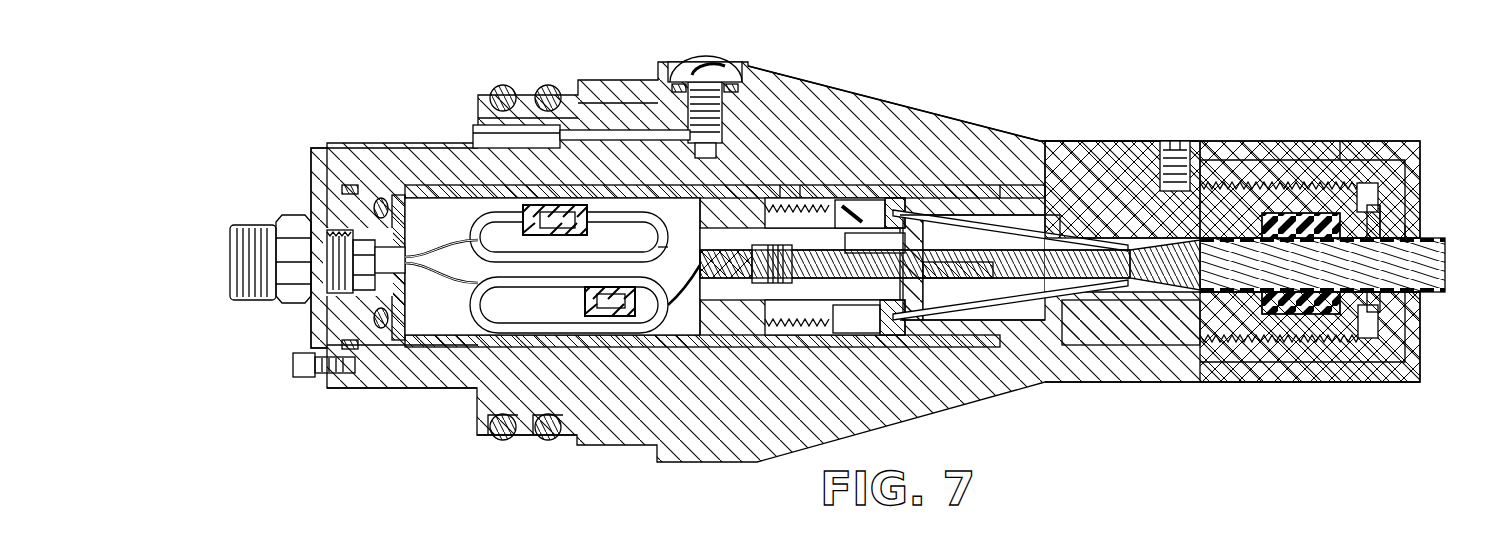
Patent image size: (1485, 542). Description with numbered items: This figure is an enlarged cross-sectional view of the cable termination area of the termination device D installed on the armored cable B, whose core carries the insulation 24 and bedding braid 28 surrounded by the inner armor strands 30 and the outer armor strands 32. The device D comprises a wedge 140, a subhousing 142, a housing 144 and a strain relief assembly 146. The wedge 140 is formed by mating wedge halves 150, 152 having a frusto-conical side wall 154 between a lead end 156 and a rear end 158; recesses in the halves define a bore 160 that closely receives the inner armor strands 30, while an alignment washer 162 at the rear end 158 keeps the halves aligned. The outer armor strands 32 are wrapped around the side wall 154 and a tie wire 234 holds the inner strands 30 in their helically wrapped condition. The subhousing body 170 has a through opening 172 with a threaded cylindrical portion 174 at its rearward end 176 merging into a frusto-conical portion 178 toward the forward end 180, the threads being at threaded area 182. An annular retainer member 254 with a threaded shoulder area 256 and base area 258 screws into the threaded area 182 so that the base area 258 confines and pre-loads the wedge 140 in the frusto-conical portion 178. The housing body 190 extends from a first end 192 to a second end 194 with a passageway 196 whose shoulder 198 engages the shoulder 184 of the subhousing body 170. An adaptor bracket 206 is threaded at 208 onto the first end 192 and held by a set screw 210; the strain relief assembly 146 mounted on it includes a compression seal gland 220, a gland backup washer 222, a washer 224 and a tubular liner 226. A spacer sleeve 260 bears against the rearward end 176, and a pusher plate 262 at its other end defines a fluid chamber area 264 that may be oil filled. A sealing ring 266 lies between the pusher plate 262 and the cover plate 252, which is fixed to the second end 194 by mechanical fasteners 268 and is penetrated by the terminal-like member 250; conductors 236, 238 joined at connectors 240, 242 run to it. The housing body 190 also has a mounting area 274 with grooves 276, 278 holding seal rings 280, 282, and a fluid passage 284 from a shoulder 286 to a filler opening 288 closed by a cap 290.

The insulation 24 is at (704, 202).
The bedding braid 28 is at (738, 280).
The inner armor strands 30 is at (837, 287).
The outer armor strands 32 is at (1130, 258).
The wedge 140 is at (1058, 300).
The subhousing 142 is at (840, 180).
The housing 144 is at (1019, 122).
The strain relief assembly 146 is at (1260, 386).
The wedge half 150 is at (978, 237).
The wedge half 152 is at (1005, 300).
The frusto-conical side wall 154 is at (1008, 238).
The lead end 156 is at (1118, 290).
The rear end 158 is at (903, 312).
The bore 160 is at (993, 275).
The alignment washer 162 is at (905, 243).
The subhousing body 170 is at (890, 192).
The through opening 172 is at (820, 196).
The cylindrical portion 174 is at (862, 205).
The rearward end 176 is at (790, 195).
The frusto-conical portion 178 is at (975, 222).
The forward end 180 is at (1202, 305).
The threaded area 182 is at (838, 320).
The radial locating shoulder area 184 is at (1066, 206).
The housing body 190 is at (806, 82).
The first end 192 is at (1367, 187).
The second end 194 is at (337, 133).
The passageway 196 is at (421, 348).
The radial locating shoulder area 198 is at (1052, 193).
The adaptor bracket 206 is at (1245, 160).
The threaded connection 208 is at (1290, 185).
The set screw 210 is at (1187, 157).
The compression seal gland 220 is at (1305, 305).
The gland backup washer 222 is at (1378, 322).
The washer 224 is at (1385, 215).
The tubular liner 226 is at (1248, 240).
The tie wire 234 is at (797, 216).
The electrical conductor 236 is at (450, 247).
The electrical conductor 238 is at (447, 280).
The connector 240 is at (586, 207).
The connector 242 is at (625, 318).
The terminal-like member 250 is at (300, 300).
The cover plate 252 is at (310, 330).
The annular retainer member 254 is at (692, 213).
The threaded shoulder area 256 is at (787, 285).
The base area 258 is at (895, 203).
The spacer sleeve 260 is at (472, 193).
The pusher plate 262 is at (410, 208).
The fluid chamber area 264 is at (462, 318).
The sealing ring 266 is at (372, 212).
The mechanical fasteners 268 is at (300, 370).
The mounting area 274 is at (528, 440).
The circumferential groove 276 is at (500, 425).
The circumferential groove 278 is at (557, 423).
The seal ring 280 is at (503, 438).
The seal ring 282 is at (545, 440).
The fluid passage 284 is at (590, 135).
The shoulder 286 is at (311, 160).
The filler opening 288 is at (728, 108).
The cap 290 is at (700, 75).
The armored cable B is at (1245, 288).
The termination device D is at (1347, 137).